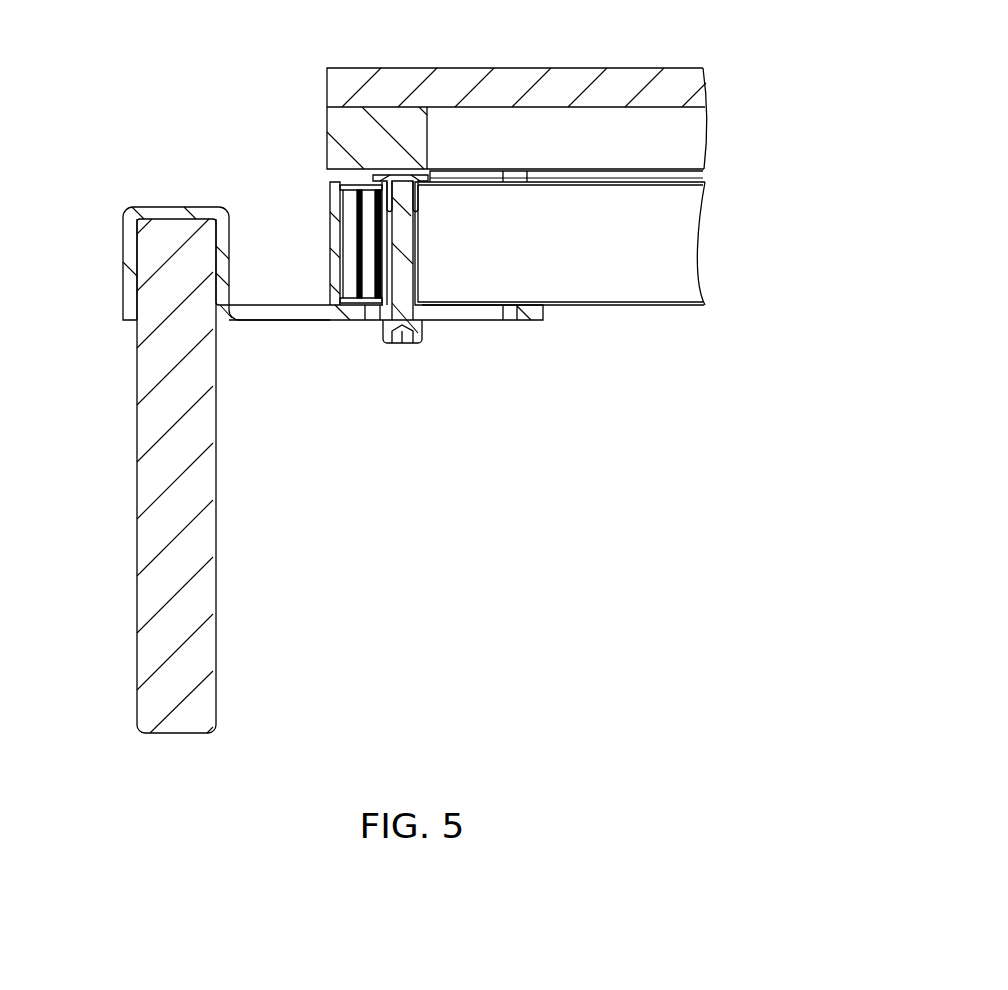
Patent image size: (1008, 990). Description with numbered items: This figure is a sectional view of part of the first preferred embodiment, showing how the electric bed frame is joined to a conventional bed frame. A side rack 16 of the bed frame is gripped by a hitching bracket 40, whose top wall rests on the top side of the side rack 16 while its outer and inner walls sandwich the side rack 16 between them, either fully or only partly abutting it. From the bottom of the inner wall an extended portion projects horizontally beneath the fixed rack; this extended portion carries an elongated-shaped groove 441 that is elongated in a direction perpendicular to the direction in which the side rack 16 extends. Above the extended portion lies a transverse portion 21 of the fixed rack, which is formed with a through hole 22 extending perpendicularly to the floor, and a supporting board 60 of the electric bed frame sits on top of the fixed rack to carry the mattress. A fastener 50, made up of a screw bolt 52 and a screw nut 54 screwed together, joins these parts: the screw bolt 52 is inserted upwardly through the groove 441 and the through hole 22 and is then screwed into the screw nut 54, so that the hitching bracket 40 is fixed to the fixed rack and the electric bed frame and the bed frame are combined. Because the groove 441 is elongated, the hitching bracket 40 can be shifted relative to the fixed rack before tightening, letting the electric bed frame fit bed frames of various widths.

The side rack 16 is at (155, 482).
The transverse portion 21 is at (597, 307).
The through hole 22 is at (420, 187).
The hitching bracket 40 is at (162, 212).
The elongated-shaped groove 441 is at (441, 322).
The fastener 50 is at (380, 353).
The screw bolt 52 is at (395, 273).
The screw nut 54 is at (377, 183).
The supporting board 60 is at (552, 67).